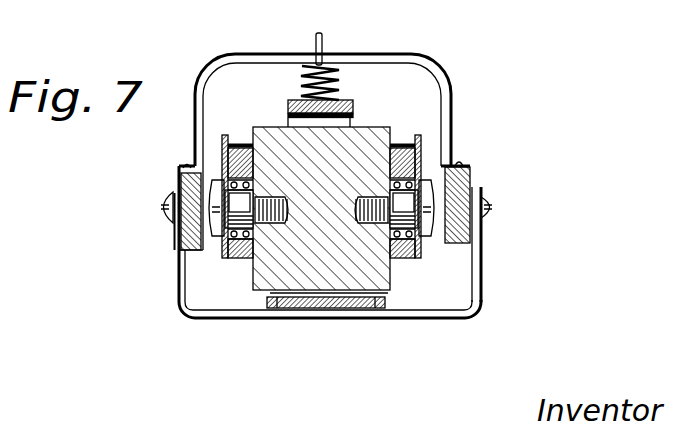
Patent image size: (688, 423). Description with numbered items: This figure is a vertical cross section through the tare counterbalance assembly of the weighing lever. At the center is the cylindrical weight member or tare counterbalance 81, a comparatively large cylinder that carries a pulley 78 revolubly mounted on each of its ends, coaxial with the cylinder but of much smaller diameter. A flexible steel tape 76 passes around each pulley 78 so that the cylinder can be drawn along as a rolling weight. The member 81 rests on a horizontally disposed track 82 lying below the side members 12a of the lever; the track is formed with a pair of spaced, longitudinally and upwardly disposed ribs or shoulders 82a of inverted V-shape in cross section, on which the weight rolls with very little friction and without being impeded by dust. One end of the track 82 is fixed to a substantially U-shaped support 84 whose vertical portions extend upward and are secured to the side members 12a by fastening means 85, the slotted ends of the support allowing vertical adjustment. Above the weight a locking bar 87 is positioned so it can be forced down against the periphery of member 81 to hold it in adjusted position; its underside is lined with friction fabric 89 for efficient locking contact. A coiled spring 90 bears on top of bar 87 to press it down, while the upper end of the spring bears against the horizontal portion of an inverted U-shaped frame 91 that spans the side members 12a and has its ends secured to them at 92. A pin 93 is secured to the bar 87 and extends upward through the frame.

The side members 12a is at (584, 182).
The flexible connection or steel tape 76 is at (236, 141).
The pulley 78 is at (224, 259).
The cylindrical weight member or tare counterbalance 81 is at (323, 268).
The track 82 is at (348, 308).
The ribs or shoulders 82a is at (424, 398).
The support 84 is at (190, 318).
The fastening means 85 is at (160, 203).
The locking bar 87 is at (289, 102).
The friction material or fabric 89 is at (354, 115).
The coiled spring 90 is at (345, 73).
The inverted U-shaped frame 91 is at (430, 61).
The frame end securement 92 is at (186, 168).
The pin 93 is at (318, 44).